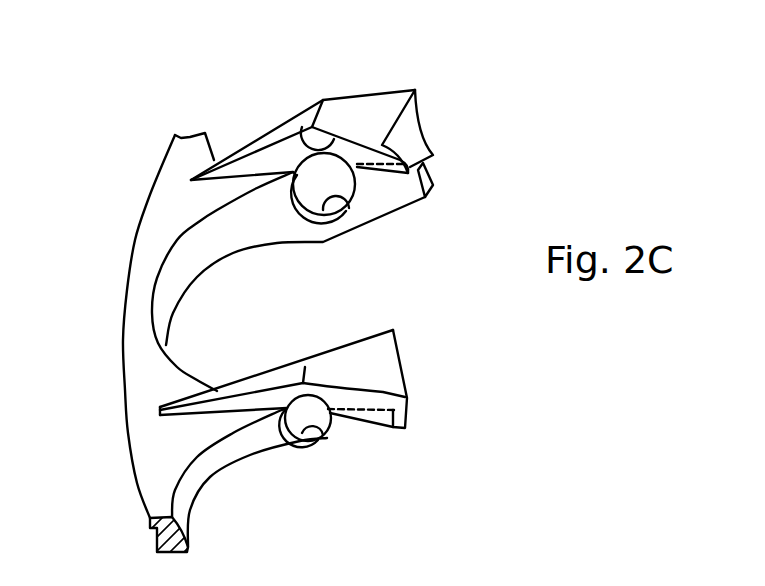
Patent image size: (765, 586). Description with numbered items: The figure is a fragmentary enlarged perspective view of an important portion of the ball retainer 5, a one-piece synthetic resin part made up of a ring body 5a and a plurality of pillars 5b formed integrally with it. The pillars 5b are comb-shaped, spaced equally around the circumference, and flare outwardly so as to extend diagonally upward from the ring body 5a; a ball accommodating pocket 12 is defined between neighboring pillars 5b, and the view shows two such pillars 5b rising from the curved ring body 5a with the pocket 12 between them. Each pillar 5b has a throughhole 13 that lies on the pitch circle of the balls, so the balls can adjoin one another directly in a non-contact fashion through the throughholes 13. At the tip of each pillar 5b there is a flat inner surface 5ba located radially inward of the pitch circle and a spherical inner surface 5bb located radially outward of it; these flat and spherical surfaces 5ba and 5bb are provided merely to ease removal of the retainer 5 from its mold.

The ball retainer 5 is at (136, 202).
The ring body 5a is at (138, 360).
The pillar 5b is at (363, 113).
The inner surface 5ba is at (397, 200).
The inner surface 5bb is at (302, 137).
The ball accommodating pocket 12 is at (228, 247).
The throughhole 13 is at (352, 203).